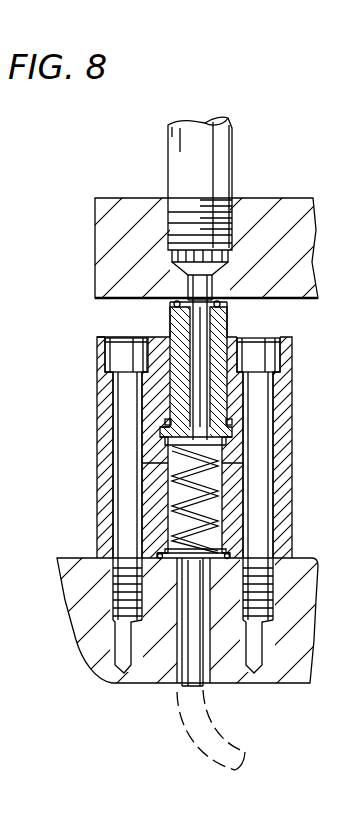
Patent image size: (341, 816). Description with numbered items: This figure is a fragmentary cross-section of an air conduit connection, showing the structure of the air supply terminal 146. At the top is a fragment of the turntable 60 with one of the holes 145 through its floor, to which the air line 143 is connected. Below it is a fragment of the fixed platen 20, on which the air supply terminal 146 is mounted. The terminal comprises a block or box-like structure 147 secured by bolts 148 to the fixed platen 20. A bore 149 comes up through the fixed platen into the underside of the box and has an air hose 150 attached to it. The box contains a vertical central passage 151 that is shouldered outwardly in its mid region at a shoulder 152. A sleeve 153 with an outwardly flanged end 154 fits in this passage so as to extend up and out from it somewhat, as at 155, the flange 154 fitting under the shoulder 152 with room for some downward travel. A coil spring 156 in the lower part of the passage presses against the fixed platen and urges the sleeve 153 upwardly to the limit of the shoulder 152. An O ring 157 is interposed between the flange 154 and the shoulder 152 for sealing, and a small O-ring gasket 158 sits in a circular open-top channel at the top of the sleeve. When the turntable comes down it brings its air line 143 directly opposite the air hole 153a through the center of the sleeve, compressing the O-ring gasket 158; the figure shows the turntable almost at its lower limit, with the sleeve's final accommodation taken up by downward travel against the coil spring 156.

The fixed platen 20 is at (70, 577).
The turntable 60 is at (273, 203).
The air line 143 is at (173, 165).
The hole 145 is at (213, 287).
The air supply terminal 146 is at (96, 345).
The block or box-like structure 147 is at (95, 453).
The bolts 148 is at (118, 490).
The bore 149 is at (181, 684).
The air hose 150 is at (192, 728).
The vertical central passage 151 is at (175, 511).
The shoulder 152 is at (165, 422).
The sleeve 153 is at (168, 414).
The air hole 153a is at (205, 328).
The outwardly flanged end 154 is at (165, 434).
The projecting portion of sleeve 155 is at (162, 304).
The coil spring 156 is at (170, 554).
The O ring 157 is at (158, 427).
The O-ring gasket 158 is at (175, 298).